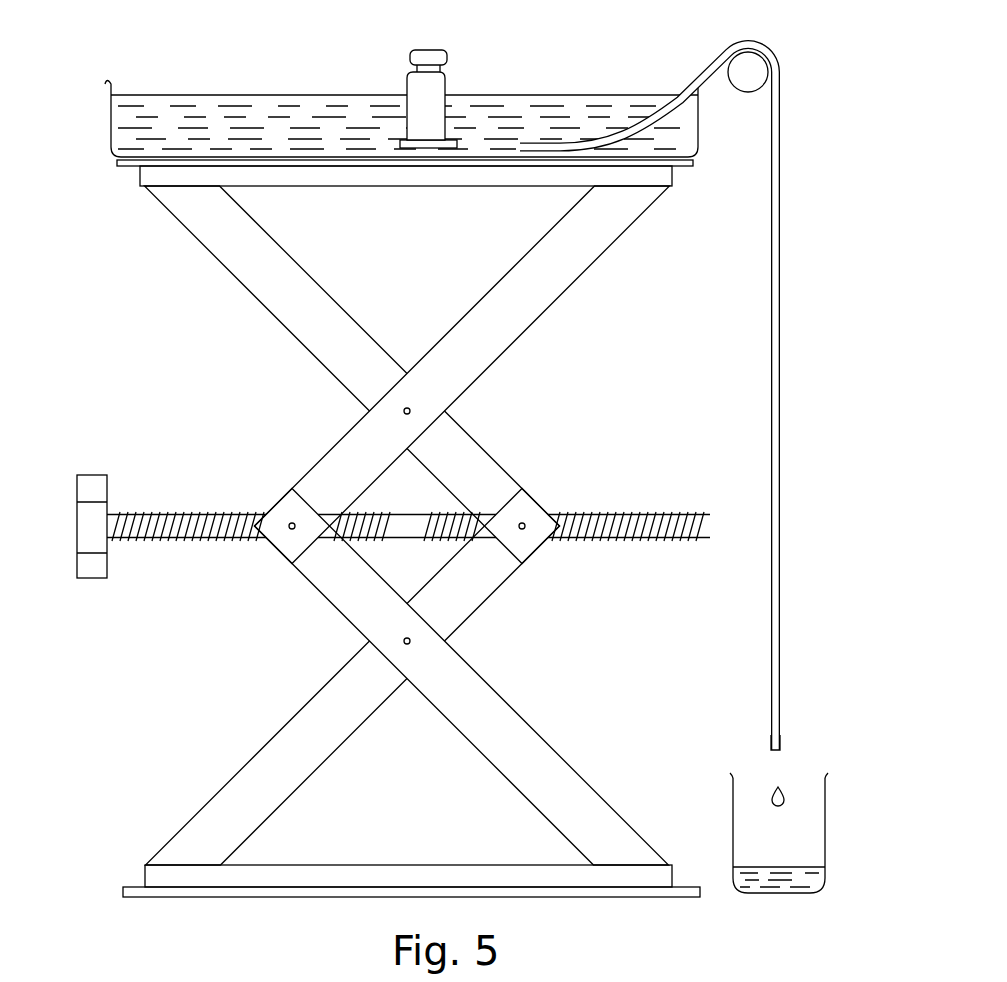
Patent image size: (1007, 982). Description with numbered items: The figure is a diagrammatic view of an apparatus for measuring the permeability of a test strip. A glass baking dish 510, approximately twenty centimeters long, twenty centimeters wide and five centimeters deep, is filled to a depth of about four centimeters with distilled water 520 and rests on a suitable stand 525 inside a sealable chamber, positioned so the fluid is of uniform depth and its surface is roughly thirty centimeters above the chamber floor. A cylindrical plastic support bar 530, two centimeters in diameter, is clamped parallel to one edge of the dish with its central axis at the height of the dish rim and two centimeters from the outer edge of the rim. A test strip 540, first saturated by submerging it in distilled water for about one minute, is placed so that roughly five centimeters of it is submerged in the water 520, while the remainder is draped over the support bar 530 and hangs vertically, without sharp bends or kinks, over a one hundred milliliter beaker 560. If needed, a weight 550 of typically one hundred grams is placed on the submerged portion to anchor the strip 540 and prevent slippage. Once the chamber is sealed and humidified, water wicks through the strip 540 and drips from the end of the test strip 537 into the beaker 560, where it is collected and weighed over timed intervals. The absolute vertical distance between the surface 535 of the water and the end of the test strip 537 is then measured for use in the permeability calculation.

The glass baking dish 510 is at (108, 124).
The distilled water 520 is at (171, 127).
The stand 525 is at (298, 313).
The support bar 530 is at (748, 70).
The surface of the water 535 is at (677, 90).
The end of the test strip 537 is at (773, 755).
The test strip 540 is at (780, 407).
The weight 550 is at (427, 82).
The beaker 560 is at (828, 830).